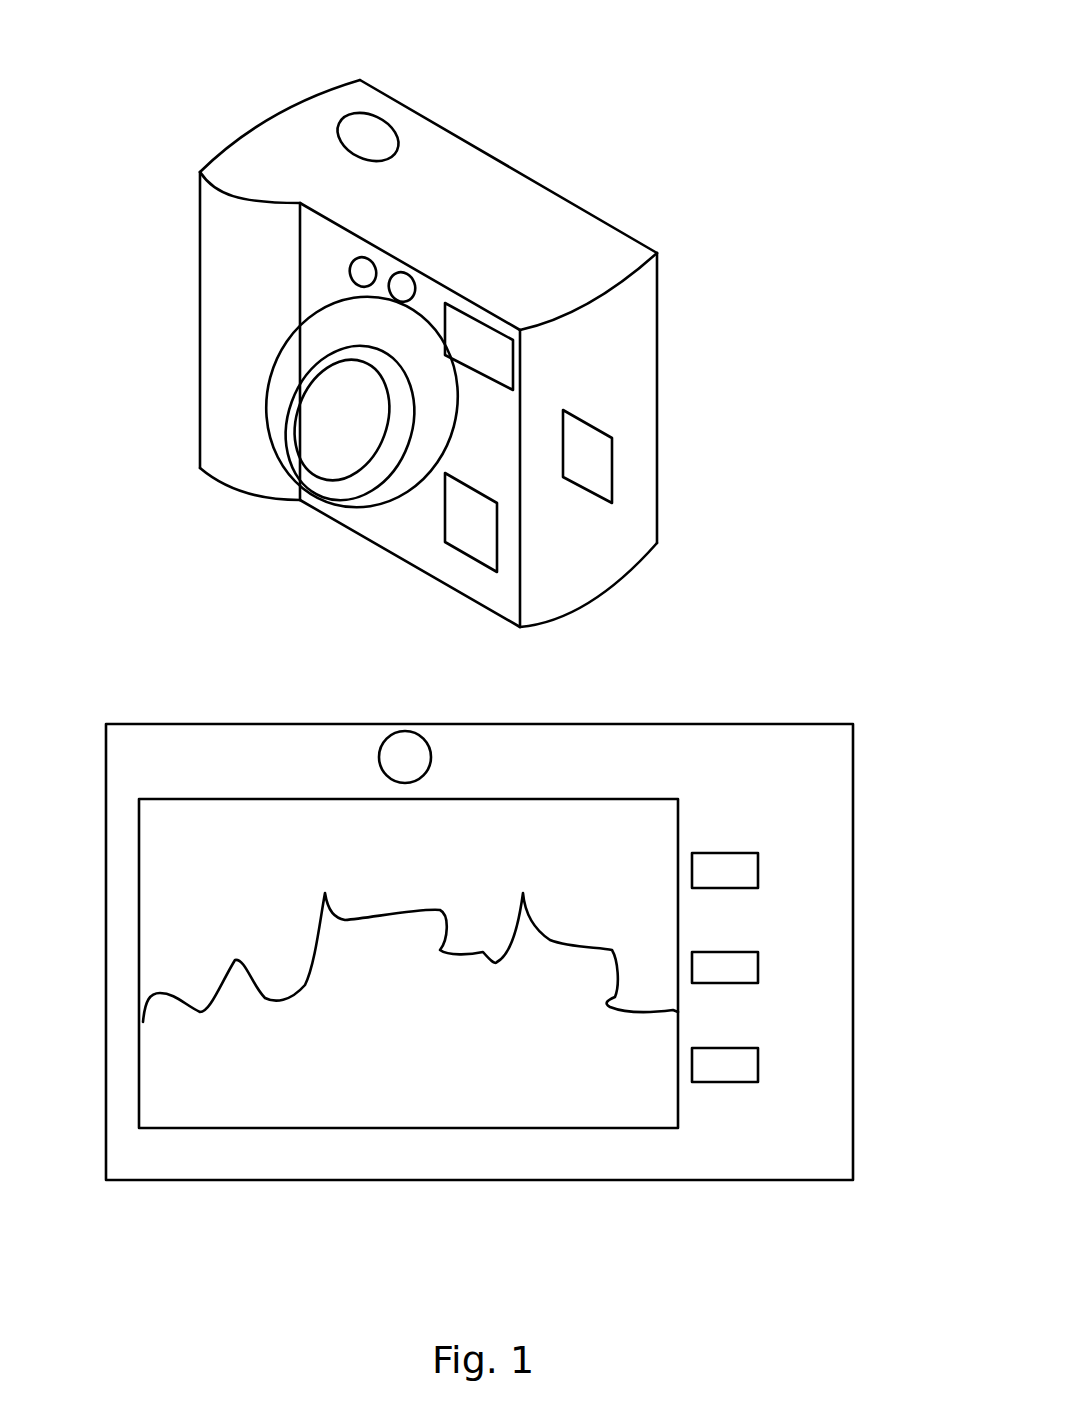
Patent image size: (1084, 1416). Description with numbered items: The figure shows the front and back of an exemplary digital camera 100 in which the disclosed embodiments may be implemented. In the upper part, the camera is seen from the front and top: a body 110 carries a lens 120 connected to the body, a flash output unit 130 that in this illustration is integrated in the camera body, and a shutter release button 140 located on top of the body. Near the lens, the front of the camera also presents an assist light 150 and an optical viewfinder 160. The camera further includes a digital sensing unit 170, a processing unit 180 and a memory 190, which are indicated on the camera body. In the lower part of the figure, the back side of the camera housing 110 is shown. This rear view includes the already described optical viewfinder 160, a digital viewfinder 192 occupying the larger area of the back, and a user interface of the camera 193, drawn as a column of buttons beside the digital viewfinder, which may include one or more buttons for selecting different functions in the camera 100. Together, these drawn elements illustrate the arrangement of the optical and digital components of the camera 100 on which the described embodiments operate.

The digital camera 100 is at (808, 678).
The body 110 is at (462, 220).
The lens 120 is at (338, 407).
The flash output unit 130 is at (483, 362).
The shutter release button 140 is at (368, 132).
The assist light 150 is at (362, 271).
The optical viewfinder 160 is at (397, 753).
The digital sensing unit 170 is at (390, 395).
The processing unit 180 is at (470, 528).
The memory 190 is at (593, 470).
The digital viewfinder 192 is at (297, 1128).
The user interface 193 is at (730, 1057).